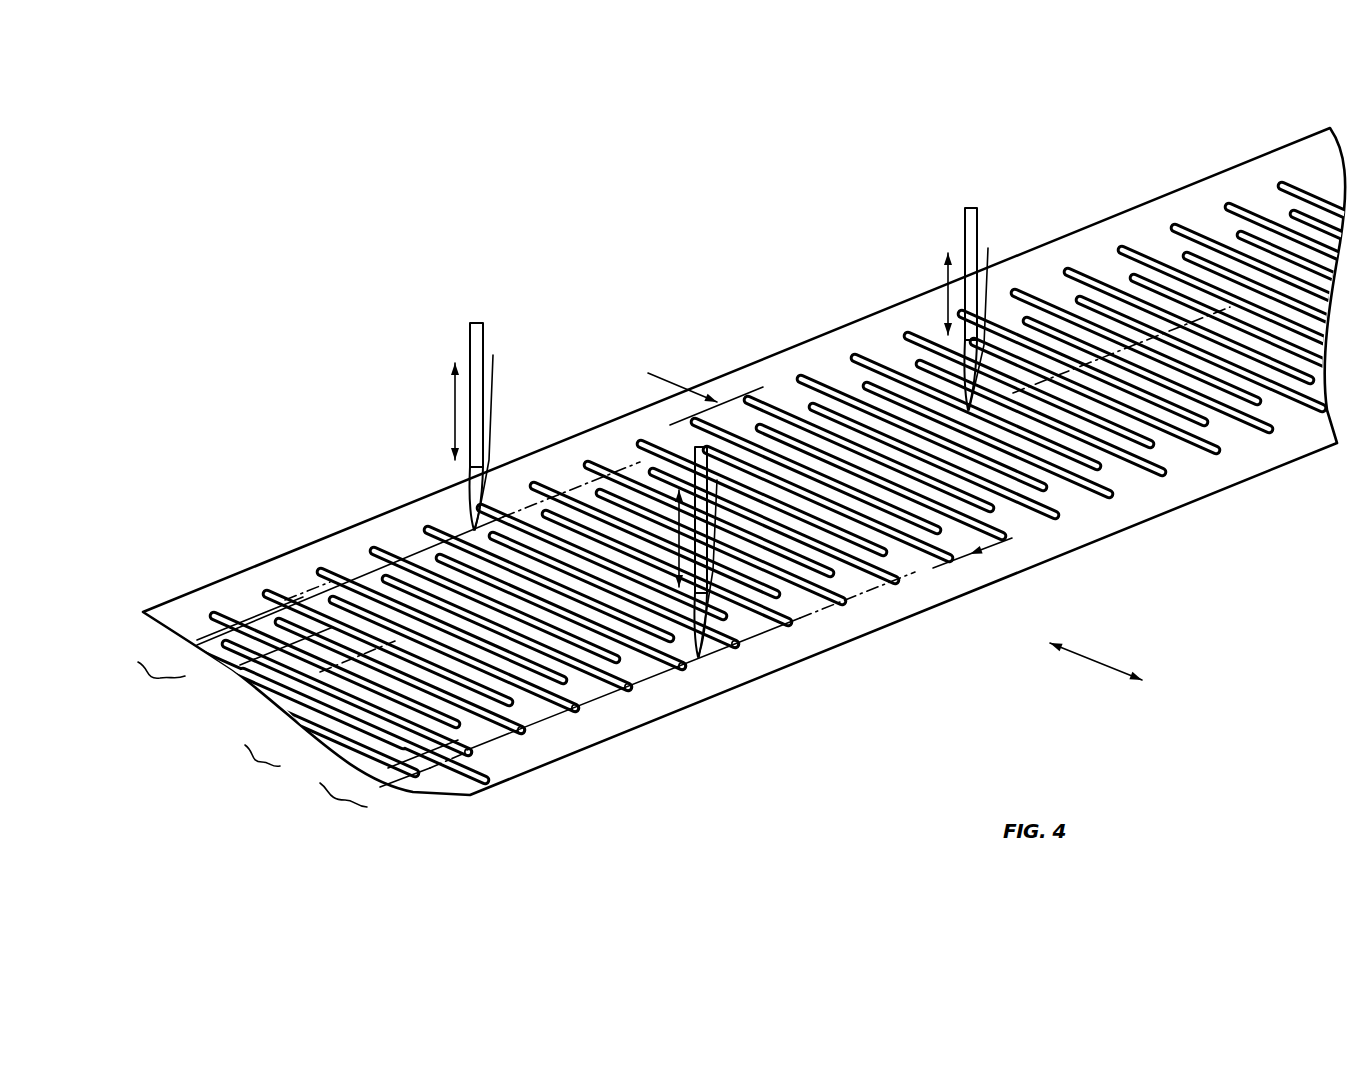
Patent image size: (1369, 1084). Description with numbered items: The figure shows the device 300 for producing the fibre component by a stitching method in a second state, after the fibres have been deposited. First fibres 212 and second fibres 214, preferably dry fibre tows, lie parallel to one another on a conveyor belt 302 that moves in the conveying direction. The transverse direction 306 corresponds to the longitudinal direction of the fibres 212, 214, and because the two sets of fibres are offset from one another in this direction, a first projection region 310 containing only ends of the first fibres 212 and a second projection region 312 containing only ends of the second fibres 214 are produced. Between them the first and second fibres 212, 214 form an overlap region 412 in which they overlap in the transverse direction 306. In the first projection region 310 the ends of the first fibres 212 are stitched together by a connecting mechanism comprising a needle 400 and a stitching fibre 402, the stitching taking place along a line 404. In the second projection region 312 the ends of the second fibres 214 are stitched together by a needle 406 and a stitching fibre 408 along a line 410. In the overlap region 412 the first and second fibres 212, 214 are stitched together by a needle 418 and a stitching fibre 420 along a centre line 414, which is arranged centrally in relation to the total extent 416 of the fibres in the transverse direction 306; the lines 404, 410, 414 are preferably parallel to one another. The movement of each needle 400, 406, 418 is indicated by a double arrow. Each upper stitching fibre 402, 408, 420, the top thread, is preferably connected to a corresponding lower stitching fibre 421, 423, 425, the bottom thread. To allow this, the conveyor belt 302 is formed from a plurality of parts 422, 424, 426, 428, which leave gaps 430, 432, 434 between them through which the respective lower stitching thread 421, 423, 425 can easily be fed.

The device 300 is at (322, 220).
The second fibres 214 is at (377, 550).
The stitching fibre 402 is at (735, 535).
The lower stitching fibre 421 is at (518, 730).
The first fibres 212 is at (467, 752).
The conveyor belt 302 is at (645, 713).
The needle 406 is at (470, 340).
The stitching fibre 408 is at (493, 380).
The needle 400 is at (722, 527).
The needle 418 is at (962, 228).
The stitching fibre 420 is at (988, 242).
The lower stitching fibre 425 is at (880, 445).
The line 410 is at (633, 465).
The total extent 416 is at (1020, 583).
The line 404 is at (860, 590).
The centre line 414 is at (1147, 347).
The transverse direction 306 is at (1090, 658).
The lower stitching fibre 423 is at (310, 595).
The part of the conveyor belt 428 is at (183, 607).
The gap 434 is at (197, 645).
The second projection region 312 is at (148, 684).
The part of the conveyor belt 426 is at (265, 703).
The gap 432 is at (240, 667).
The overlap region 412 is at (247, 765).
The part of the conveyor belt 424 is at (320, 733).
The part of the conveyor belt 422 is at (440, 785).
The first projection region 310 is at (331, 814).
The gap 430 is at (385, 795).